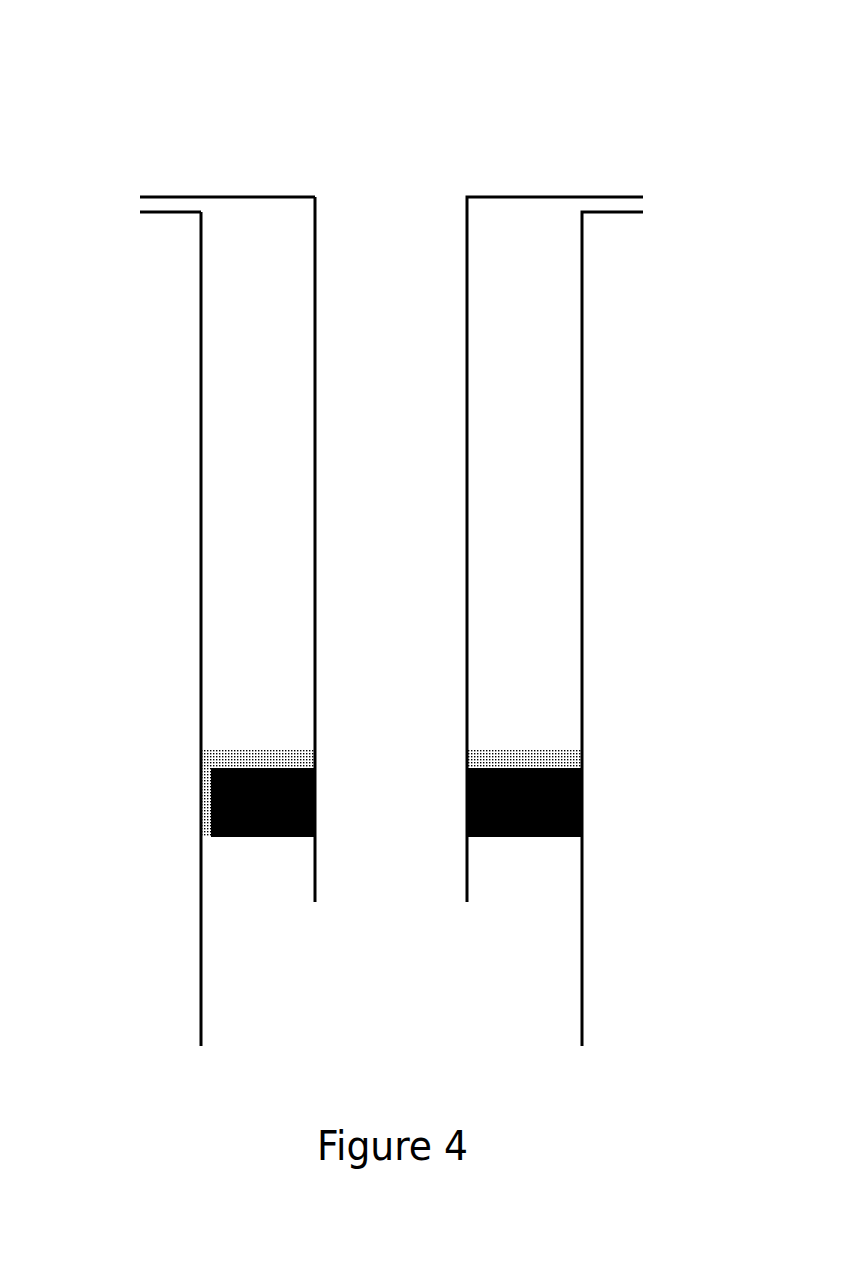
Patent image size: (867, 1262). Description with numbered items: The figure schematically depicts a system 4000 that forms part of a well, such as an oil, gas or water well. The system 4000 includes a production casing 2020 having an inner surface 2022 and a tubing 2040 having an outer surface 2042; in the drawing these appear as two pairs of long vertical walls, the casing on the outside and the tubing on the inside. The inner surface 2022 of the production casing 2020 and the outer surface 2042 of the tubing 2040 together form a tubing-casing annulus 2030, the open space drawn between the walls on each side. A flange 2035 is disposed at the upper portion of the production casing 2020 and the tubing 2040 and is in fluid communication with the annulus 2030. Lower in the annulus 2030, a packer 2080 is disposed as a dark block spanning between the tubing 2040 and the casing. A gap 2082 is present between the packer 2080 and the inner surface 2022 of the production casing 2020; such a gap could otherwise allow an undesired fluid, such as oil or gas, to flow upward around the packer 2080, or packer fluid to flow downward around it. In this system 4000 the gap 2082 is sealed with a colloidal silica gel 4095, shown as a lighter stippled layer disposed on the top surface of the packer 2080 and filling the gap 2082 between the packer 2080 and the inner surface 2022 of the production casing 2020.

The system 4000 is at (158, 86).
The flange 2035 is at (170, 213).
The production casing 2020 is at (200, 373).
The inner surface 2022 is at (200, 510).
The tubing 2040 is at (314, 616).
The outer surface 2042 is at (314, 690).
The tubing-casing annulus 2030 is at (540, 493).
The colloidal silica gel 4095 is at (205, 785).
The gap 2082 is at (200, 820).
The packer 2080 is at (530, 837).